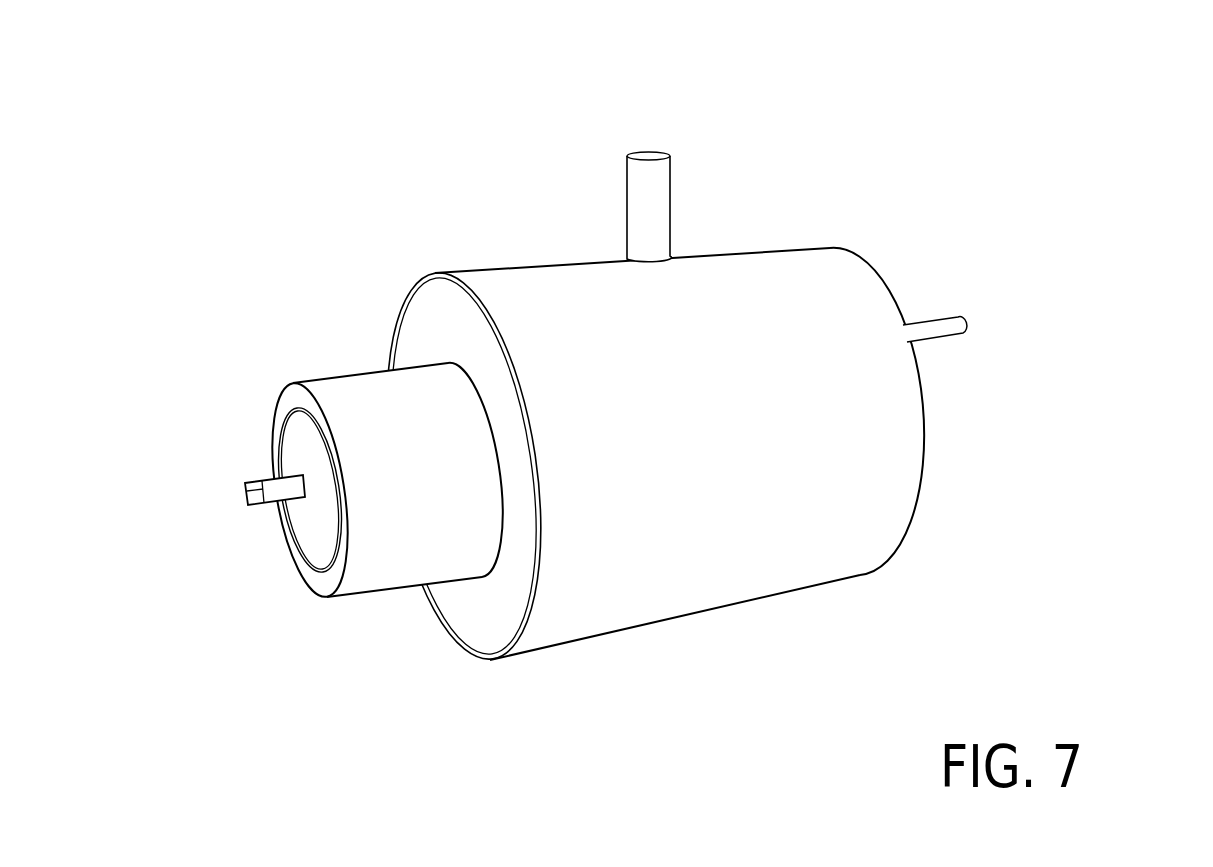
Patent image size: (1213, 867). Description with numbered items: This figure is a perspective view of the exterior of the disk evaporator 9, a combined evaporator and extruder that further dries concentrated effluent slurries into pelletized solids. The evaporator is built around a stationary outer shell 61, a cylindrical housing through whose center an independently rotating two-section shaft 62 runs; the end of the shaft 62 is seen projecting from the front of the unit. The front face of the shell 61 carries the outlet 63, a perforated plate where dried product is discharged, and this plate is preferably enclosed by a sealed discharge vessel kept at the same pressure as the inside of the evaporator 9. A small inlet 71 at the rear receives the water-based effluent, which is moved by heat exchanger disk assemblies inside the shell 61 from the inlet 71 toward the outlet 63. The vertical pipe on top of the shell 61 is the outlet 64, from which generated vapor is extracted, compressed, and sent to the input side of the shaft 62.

The disk evaporator 9 is at (675, 352).
The outer shell 61 is at (837, 292).
The two-section shaft 62 is at (277, 493).
The perforated plate 63 is at (293, 447).
The outlet 64 is at (653, 155).
The inlet 71 is at (942, 328).